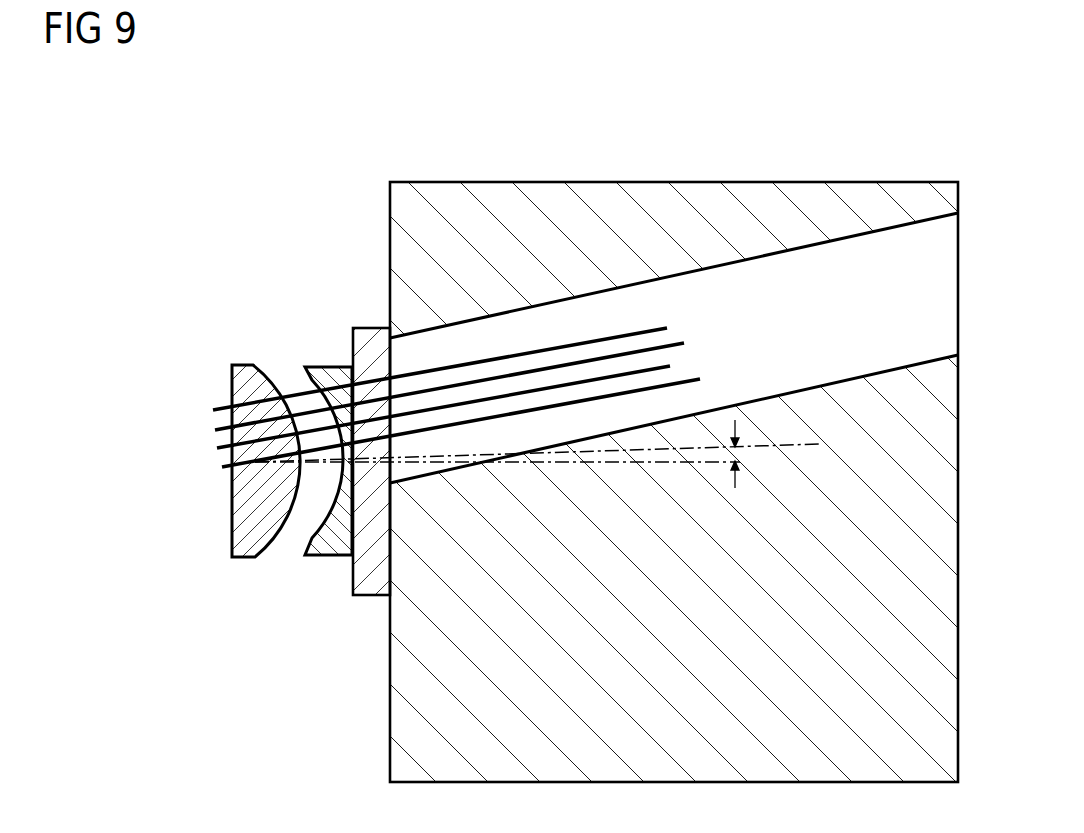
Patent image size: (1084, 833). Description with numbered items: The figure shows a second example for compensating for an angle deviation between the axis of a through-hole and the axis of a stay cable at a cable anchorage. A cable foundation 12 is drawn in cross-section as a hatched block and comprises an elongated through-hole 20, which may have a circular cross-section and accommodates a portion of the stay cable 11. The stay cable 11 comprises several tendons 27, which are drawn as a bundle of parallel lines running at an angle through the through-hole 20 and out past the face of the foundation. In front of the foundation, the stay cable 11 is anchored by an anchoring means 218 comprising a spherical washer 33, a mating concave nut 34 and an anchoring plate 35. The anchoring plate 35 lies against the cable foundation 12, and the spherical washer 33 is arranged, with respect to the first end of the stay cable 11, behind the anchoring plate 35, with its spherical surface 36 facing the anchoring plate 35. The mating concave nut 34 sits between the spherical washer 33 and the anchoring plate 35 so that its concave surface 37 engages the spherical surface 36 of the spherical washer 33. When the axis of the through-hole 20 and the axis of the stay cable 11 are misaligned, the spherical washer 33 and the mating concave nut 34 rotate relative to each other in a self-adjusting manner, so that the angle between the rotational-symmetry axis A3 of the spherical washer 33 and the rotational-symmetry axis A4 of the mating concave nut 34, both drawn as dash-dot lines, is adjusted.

The cable foundation 12 is at (686, 182).
The through-hole 20 is at (885, 372).
The stay cable 11 is at (456, 350).
The tendons 27 is at (587, 342).
The anchoring means 218 is at (246, 210).
The spherical washer 33 is at (238, 365).
The mating concave nut 34 is at (312, 367).
The anchoring plate 35 is at (376, 328).
The spherical surface 36 is at (280, 535).
The concave surface 37 is at (332, 502).
The rotational-symmetry axis of the spherical washer A3 is at (820, 447).
The rotational-symmetry axis of the mating concave nut A4 is at (657, 465).